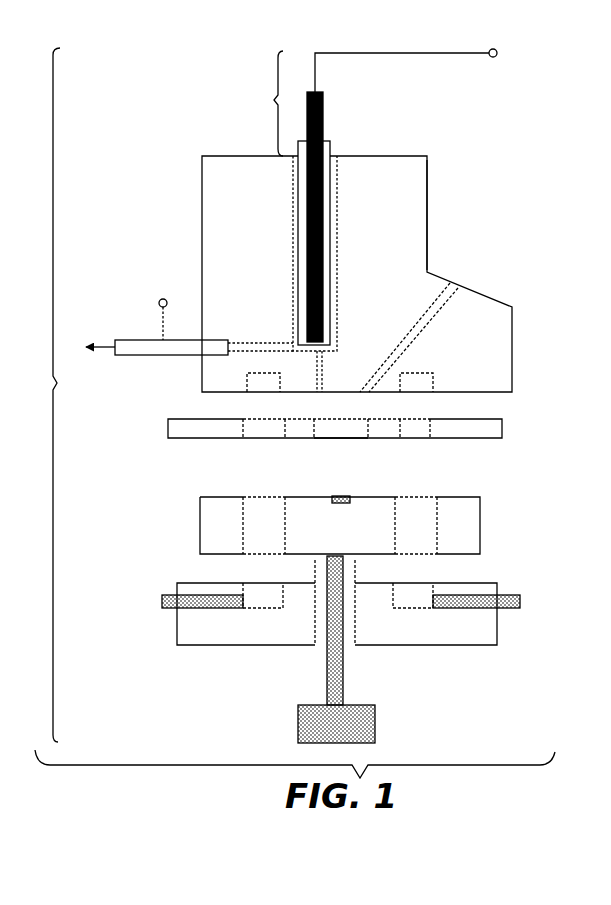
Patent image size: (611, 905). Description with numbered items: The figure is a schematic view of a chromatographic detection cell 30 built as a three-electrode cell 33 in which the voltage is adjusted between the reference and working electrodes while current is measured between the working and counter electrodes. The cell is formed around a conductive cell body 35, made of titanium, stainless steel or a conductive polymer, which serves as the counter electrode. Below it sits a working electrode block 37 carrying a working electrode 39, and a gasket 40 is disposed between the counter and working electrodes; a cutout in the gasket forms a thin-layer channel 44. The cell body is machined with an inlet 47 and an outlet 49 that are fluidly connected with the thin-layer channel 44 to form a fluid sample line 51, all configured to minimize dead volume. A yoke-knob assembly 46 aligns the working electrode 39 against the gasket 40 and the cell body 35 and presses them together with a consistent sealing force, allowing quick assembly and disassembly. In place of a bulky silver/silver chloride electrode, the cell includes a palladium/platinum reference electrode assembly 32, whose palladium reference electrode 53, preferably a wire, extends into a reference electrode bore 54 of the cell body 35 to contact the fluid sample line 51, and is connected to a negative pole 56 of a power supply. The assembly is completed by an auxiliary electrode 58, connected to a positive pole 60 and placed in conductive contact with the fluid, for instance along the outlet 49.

The chromatographic detection cell 30 is at (295, 413).
The reference electrode assembly 32 is at (364, 198).
The three-electrode cell 33 is at (516, 321).
The conductive cell body 35 is at (428, 206).
The working electrode block 37 is at (475, 516).
The working electrode 39 is at (343, 494).
The gasket 40 is at (495, 430).
The thin-layer channel 44 is at (343, 440).
The yoke-knob assembly 46 is at (500, 621).
The inlet 47 is at (463, 294).
The outlet 49 is at (235, 359).
The fluid sample line 51 is at (105, 347).
The palladium reference electrode 53 is at (325, 98).
The reference electrode bore 54 is at (334, 148).
The negative pole 56 is at (493, 60).
The auxiliary electrode 58 is at (150, 358).
The positive pole 60 is at (158, 302).